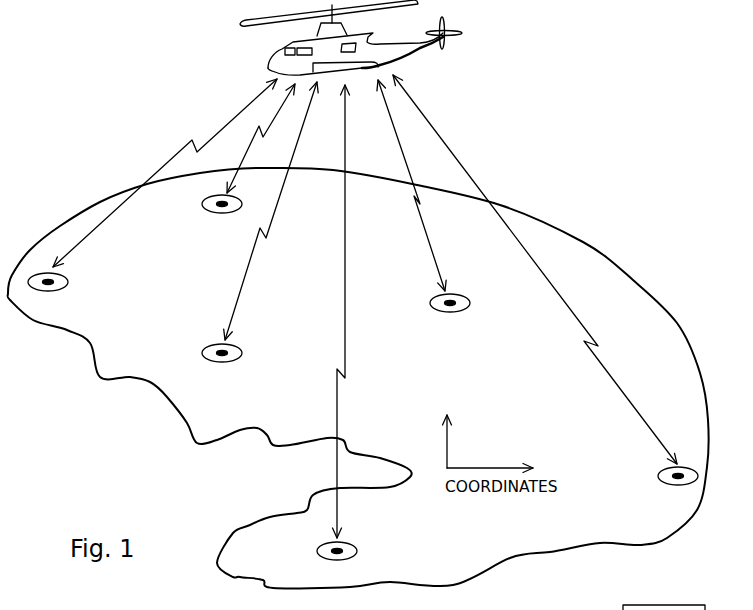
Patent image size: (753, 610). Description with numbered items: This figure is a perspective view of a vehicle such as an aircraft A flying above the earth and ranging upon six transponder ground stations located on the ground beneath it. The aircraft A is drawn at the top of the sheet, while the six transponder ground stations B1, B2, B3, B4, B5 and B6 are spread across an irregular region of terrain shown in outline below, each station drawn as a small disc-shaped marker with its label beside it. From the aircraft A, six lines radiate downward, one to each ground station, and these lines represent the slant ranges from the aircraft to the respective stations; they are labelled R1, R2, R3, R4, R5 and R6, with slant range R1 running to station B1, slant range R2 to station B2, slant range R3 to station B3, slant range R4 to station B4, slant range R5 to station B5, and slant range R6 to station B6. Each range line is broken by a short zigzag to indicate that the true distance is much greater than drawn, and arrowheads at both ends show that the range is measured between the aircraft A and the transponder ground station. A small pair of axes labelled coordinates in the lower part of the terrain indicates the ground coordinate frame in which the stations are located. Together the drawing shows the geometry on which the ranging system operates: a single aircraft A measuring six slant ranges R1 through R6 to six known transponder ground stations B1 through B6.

The aircraft A is at (410, 60).
The slant range R1 is at (291, 124).
The slant range R2 is at (167, 163).
The slant range R3 is at (277, 218).
The slant range R4 is at (345, 359).
The slant range R5 is at (433, 253).
The slant range R6 is at (626, 399).
The transponder ground station B1 is at (217, 216).
The transponder ground station B2 is at (57, 291).
The transponder ground station B3 is at (222, 367).
The transponder ground station B4 is at (343, 559).
The transponder ground station B5 is at (450, 315).
The transponder ground station B6 is at (672, 486).